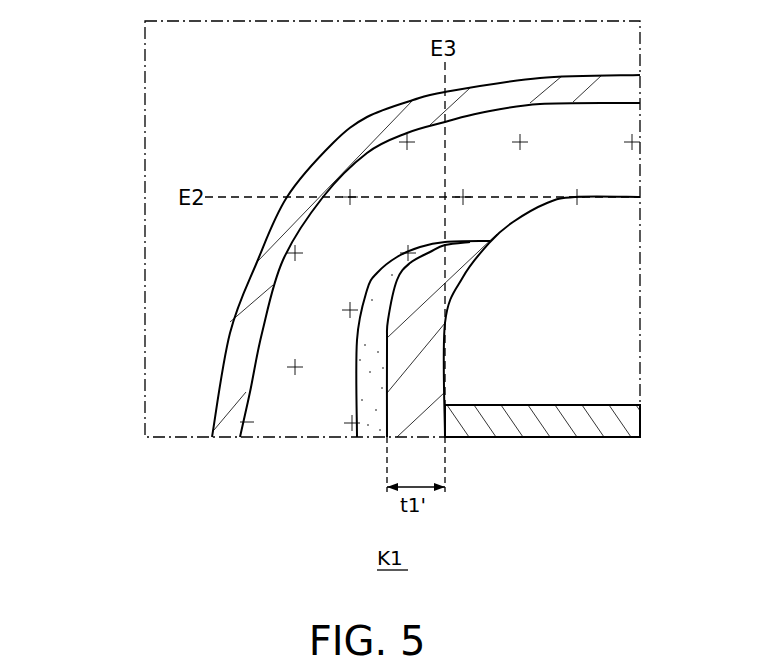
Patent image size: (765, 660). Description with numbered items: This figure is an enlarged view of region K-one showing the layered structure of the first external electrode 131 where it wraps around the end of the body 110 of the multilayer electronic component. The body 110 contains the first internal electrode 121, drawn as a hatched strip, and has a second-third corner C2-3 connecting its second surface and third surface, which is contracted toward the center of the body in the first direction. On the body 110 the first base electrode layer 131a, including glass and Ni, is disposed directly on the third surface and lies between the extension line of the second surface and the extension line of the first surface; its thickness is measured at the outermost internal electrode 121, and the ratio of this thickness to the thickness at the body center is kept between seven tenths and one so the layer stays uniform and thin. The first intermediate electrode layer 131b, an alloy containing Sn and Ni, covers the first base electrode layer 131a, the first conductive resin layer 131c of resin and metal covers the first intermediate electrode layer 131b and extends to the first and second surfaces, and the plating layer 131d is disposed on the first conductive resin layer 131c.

The first external electrode 131 is at (62, 281).
The first base electrode layer 131a is at (420, 327).
The first intermediate electrode layer 131b is at (377, 368).
The first conductive resin layer 131c is at (300, 382).
The plating layer 131d is at (238, 392).
The body 110 is at (600, 352).
The first internal electrode 121 is at (600, 418).
The second-third corner C2-3 is at (510, 228).